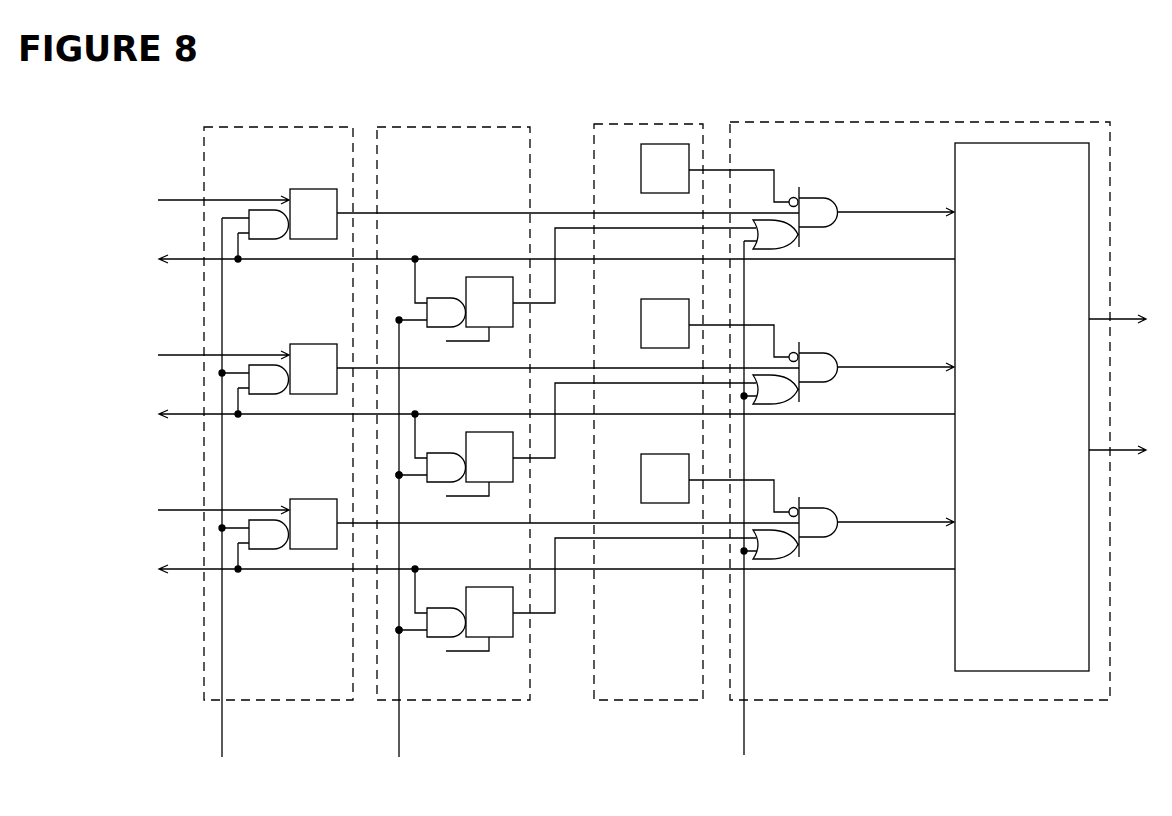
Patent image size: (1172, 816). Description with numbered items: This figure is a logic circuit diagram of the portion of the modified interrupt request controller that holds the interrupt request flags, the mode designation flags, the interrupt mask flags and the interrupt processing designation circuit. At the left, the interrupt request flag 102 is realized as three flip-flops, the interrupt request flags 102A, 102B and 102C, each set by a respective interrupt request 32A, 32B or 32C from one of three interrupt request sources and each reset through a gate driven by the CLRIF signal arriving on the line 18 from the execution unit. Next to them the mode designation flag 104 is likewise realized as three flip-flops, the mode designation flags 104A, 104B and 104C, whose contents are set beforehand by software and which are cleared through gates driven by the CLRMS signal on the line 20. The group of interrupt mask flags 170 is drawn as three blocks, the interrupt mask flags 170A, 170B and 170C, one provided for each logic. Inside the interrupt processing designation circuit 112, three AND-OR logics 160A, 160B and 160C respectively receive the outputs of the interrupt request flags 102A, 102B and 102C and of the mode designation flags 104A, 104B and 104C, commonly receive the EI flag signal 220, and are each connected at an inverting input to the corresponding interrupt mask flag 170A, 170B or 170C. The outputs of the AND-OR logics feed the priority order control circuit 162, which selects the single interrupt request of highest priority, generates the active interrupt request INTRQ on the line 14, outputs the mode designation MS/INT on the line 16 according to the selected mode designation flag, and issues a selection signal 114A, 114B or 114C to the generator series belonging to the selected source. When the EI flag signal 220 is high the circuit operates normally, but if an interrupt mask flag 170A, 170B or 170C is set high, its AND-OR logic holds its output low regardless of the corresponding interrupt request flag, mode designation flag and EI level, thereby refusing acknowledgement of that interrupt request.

The line 14 is at (1110, 320).
The line 16 is at (1110, 451).
The line 18 is at (226, 731).
The line 20 is at (401, 731).
The interrupt request signal 32A is at (221, 188).
The interrupt request signal 32B is at (221, 343).
The interrupt request signal 32C is at (221, 498).
The interrupt request flag 102 is at (275, 127).
The interrupt request flag 102A is at (309, 189).
The interrupt request flag 102B is at (309, 344).
The interrupt request flag 102C is at (309, 499).
The mode designation flag 104 is at (447, 127).
The mode designation flag 104A is at (484, 277).
The mode designation flag 104B is at (484, 432).
The mode designation flag 104C is at (484, 587).
The interrupt processing designation circuit 112 is at (832, 122).
The selection signal 114A is at (552, 247).
The selection signal 114B is at (552, 402).
The selection signal 114C is at (552, 557).
The AND-OR logic 160A is at (820, 198).
The AND-OR logic 160B is at (820, 353).
The AND-OR logic 160C is at (820, 508).
The priority order control circuit 162 is at (1005, 143).
The interrupt mask flags 170 is at (633, 124).
The interrupt mask flag 170A is at (641, 161).
The interrupt mask flag 170B is at (669, 299).
The interrupt mask flag 170C is at (669, 454).
The EI flag signal 220 is at (745, 733).